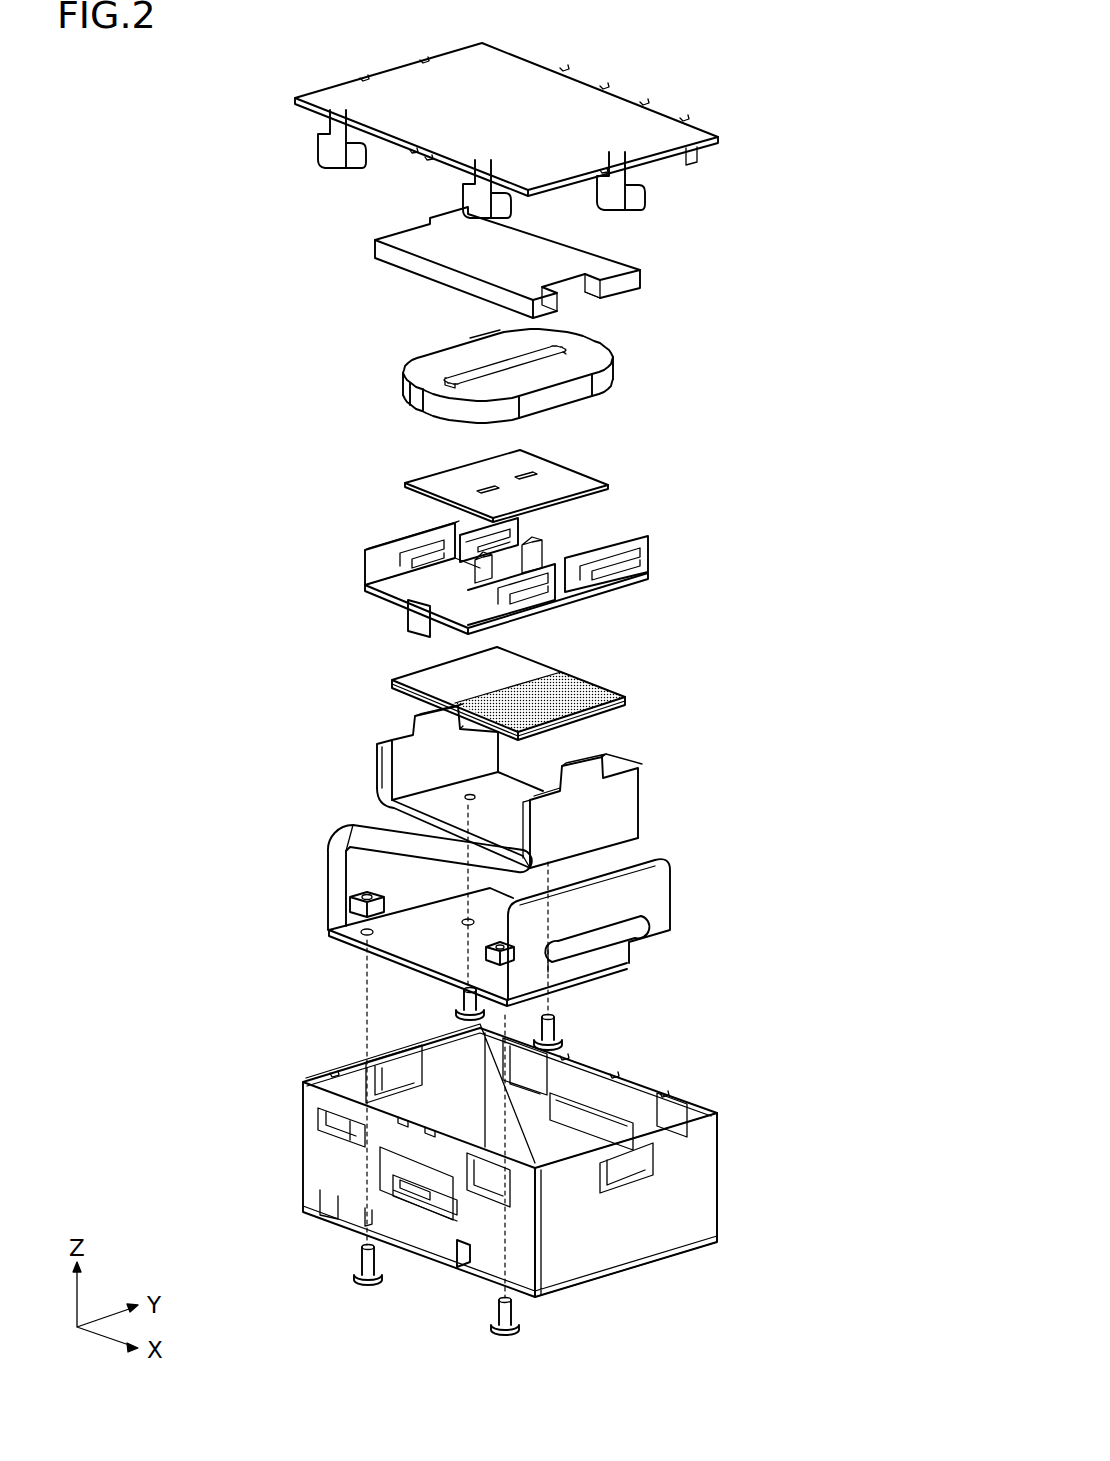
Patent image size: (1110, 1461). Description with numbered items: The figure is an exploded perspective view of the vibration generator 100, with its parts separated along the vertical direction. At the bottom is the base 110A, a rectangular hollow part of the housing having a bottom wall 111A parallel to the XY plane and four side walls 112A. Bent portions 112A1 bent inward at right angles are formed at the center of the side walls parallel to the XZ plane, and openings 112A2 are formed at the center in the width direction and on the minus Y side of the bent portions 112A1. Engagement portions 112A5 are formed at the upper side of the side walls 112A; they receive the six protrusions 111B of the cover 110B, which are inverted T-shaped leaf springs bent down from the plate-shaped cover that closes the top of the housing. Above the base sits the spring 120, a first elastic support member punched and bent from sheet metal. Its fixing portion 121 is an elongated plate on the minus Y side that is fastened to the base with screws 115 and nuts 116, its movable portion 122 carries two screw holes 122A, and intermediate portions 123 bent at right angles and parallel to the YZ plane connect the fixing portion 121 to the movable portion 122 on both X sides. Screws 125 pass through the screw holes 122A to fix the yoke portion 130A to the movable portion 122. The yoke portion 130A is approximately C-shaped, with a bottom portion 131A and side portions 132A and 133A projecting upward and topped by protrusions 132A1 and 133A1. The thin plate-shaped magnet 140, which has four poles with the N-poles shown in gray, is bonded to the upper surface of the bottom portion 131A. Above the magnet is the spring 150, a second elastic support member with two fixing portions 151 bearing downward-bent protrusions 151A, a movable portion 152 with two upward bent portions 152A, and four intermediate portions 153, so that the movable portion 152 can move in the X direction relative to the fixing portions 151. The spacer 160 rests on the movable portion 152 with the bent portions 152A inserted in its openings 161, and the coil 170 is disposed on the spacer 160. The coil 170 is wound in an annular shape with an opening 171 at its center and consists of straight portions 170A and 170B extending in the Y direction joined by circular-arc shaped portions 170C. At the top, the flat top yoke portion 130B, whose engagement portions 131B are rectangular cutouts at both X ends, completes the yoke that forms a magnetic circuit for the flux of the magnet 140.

The vibration generator 100 is at (790, 9).
The cover 110B is at (625, 118).
The protrusions 111B is at (322, 153).
The top yoke portion 130B is at (590, 245).
The engagement portions 131B is at (592, 298).
The coil 170 is at (521, 368).
The straight portion 170A is at (480, 345).
The straight portion 170B is at (535, 380).
The circular-arc shaped portions 170C is at (580, 345).
The opening 171 is at (490, 368).
The spacer 160 is at (521, 478).
The openings 161 is at (480, 490).
The spring 150 is at (503, 565).
The fixing portions 151 is at (472, 603).
The protrusions 151A is at (415, 620).
The movable portion 152 is at (500, 560).
The bent portions 152A is at (545, 555).
The intermediate portions 153 is at (380, 565).
The magnet 140 is at (580, 680).
The yoke portion 130A is at (536, 774).
The bottom portion 131A is at (420, 822).
The side portion 132A is at (378, 740).
The protrusion 132A1 is at (418, 725).
The side portion 133A is at (645, 787).
The protrusion 133A1 is at (585, 770).
The spring 120 is at (481, 917).
The fixing portion 121 is at (410, 945).
The movable portion 122 is at (377, 857).
The screw holes 122A is at (466, 918).
The intermediate portions 123 is at (650, 877).
The nuts 116 is at (355, 905).
The screws 125 is at (562, 1025).
The base 110A is at (535, 1194).
The bottom wall 111A is at (473, 1267).
The side walls 112A is at (594, 1242).
The bent portions 112A1 is at (446, 1197).
The openings 112A2 is at (420, 1200).
The engagement portions 112A5 is at (340, 1108).
The screws 115 is at (355, 1260).